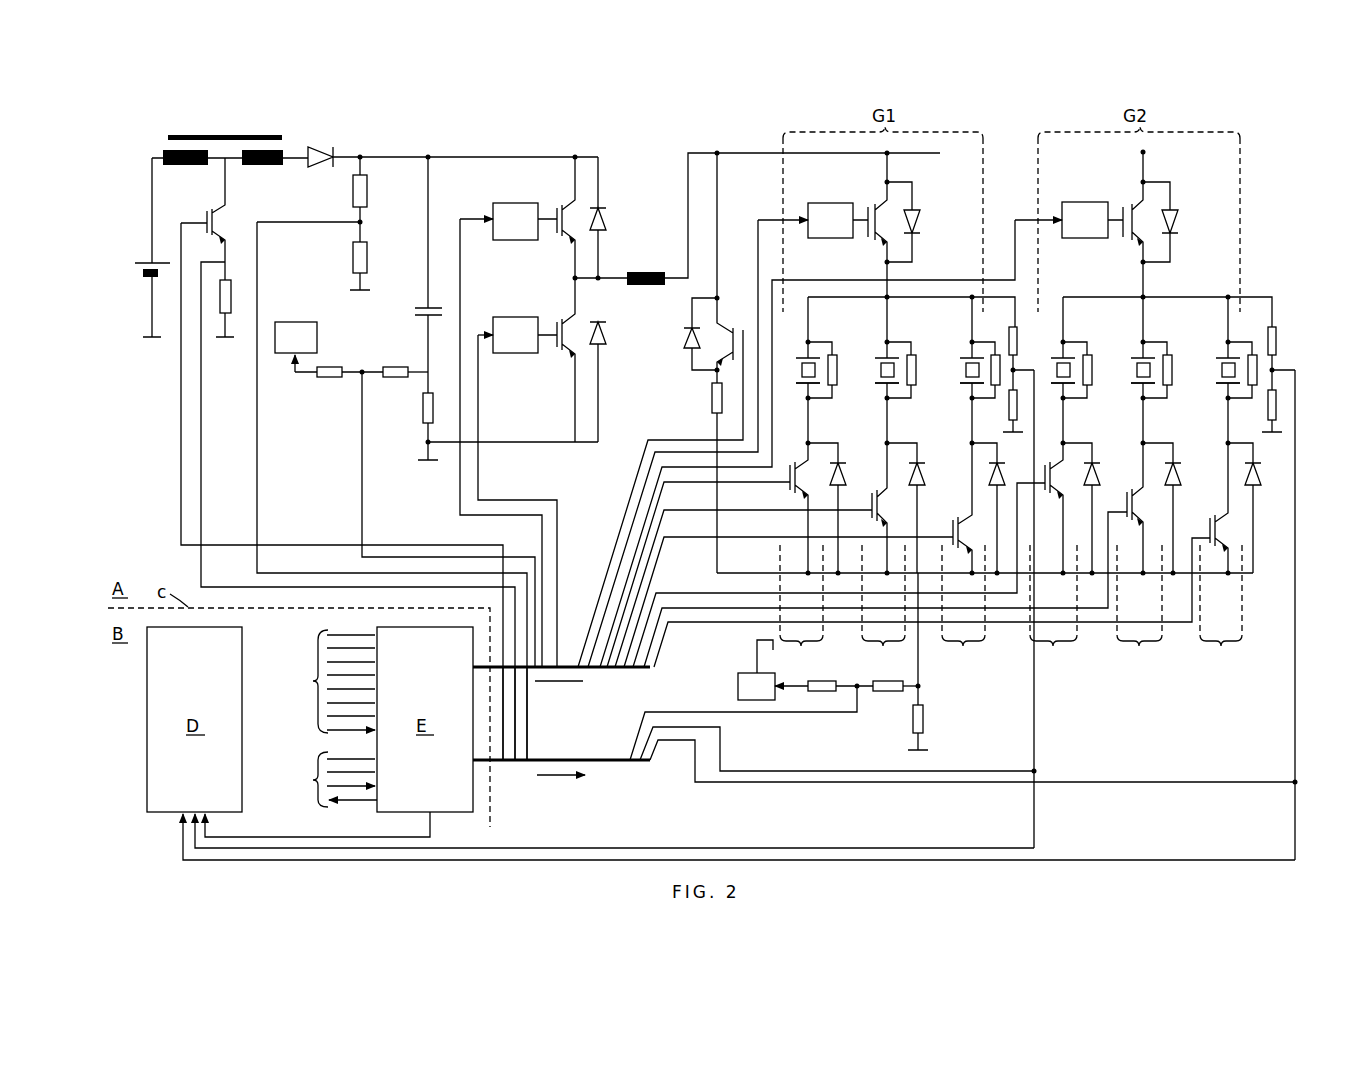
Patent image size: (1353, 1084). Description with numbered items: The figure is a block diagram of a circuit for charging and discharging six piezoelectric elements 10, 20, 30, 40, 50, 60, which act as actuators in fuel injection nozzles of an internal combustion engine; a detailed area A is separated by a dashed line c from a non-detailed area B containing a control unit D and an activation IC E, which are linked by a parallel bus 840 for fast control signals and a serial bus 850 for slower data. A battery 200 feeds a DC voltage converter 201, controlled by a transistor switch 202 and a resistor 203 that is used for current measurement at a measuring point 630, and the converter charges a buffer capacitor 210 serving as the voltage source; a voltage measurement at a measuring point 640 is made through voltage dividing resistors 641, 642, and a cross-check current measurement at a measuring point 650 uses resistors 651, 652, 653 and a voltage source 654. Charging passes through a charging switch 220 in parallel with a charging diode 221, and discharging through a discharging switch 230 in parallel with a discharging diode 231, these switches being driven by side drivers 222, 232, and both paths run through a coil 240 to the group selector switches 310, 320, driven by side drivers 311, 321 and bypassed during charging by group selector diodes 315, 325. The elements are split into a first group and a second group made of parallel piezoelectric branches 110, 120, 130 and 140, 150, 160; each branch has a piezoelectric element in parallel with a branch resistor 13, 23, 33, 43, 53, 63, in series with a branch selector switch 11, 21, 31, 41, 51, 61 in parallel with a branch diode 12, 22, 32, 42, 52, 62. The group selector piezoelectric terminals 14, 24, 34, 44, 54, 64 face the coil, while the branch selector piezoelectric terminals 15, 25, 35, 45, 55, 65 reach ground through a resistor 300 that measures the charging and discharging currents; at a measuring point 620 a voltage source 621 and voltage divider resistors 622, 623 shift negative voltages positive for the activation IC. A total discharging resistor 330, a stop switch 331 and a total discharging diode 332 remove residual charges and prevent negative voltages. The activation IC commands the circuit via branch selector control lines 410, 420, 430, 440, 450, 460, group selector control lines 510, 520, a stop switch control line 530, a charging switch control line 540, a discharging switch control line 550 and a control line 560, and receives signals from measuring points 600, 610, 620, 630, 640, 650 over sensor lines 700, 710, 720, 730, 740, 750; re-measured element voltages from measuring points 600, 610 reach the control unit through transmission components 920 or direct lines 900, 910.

The battery 200 is at (160, 258).
The DC voltage converter 201 is at (222, 135).
The transistor switch 202 is at (222, 215).
The resistor 203 is at (236, 300).
The buffer capacitor 210 is at (415, 312).
The charging switch 220 is at (548, 240).
The charging diode 221 is at (610, 212).
The side driver 222 is at (512, 203).
The discharging switch 230 is at (556, 355).
The discharging diode 231 is at (604, 345).
The side driver 232 is at (512, 317).
The coil 240 is at (646, 272).
The resistor 300 is at (923, 720).
The group selector switch 310 is at (866, 207).
The side driver 311 is at (822, 203).
The group selector diode 315 is at (920, 215).
The group selector switch 320 is at (1122, 207).
The side driver 321 is at (1077, 202).
The group selector diode 325 is at (1178, 215).
The total discharging resistor 330 is at (712, 398).
The stop switch 331 is at (742, 325).
The total discharging diode 332 is at (685, 336).
The branch selector control line 410 is at (623, 538).
The branch selector control line 420 is at (618, 563).
The branch selector control line 430 is at (615, 590).
The branch selector control line 440 is at (676, 593).
The branch selector control line 450 is at (720, 608).
The branch selector control line 460 is at (762, 622).
The group selector control line 510 is at (628, 491).
The group selector control line 520 is at (626, 515).
The stop switch control line 530 is at (633, 468).
The charging switch control line 540 is at (460, 494).
The discharging switch control line 550 is at (478, 490).
The control line 560 is at (181, 510).
The measuring point 600 is at (1020, 345).
The measuring point 610 is at (1280, 350).
The measuring point 620 is at (857, 686).
The voltage source 621 is at (738, 690).
The voltage divider resistor 622 is at (822, 692).
The voltage divider resistor 623 is at (886, 692).
The measuring point 630 is at (232, 245).
The measuring point 640 is at (362, 222).
The voltage dividing resistor 641 is at (367, 190).
The voltage dividing resistor 642 is at (367, 256).
The measuring point 650 is at (362, 370).
The resistor 651 is at (423, 425).
The resistor 652 is at (330, 377).
The resistor 653 is at (395, 377).
The voltage source 654 is at (296, 322).
The sensor line 700 is at (1036, 750).
The sensor line 710 is at (1295, 738).
The sensor line 720 is at (645, 716).
The sensor line 730 is at (503, 700).
The sensor line 740 is at (515, 728).
The sensor line 750 is at (527, 752).
The parallel bus 840 is at (312, 686).
The serial bus 850 is at (312, 779).
The direct line 900 is at (627, 848).
The direct line 910 is at (1112, 860).
The transmission components 920 is at (295, 837).
The piezoelectric element 10 is at (798, 370).
The branch selector switch 11 is at (790, 483).
The branch diode 12 is at (846, 475).
The branch resistor 13 is at (836, 375).
The group selector piezoelectric terminal 14 is at (810, 342).
The branch selector piezoelectric terminal 15 is at (798, 383).
The piezoelectric element 20 is at (877, 370).
The branch selector switch 21 is at (872, 503).
The branch diode 22 is at (925, 480).
The branch resistor 23 is at (915, 375).
The group selector piezoelectric terminal 24 is at (889, 342).
The branch selector piezoelectric terminal 25 is at (878, 383).
The piezoelectric element 30 is at (962, 370).
The branch selector switch 31 is at (953, 533).
The branch diode 32 is at (1005, 478).
The branch resistor 33 is at (998, 390).
The group selector piezoelectric terminal 34 is at (975, 342).
The branch selector piezoelectric terminal 35 is at (962, 383).
The piezoelectric element 40 is at (1053, 370).
The branch selector switch 41 is at (1052, 505).
The branch diode 42 is at (1100, 475).
The branch resistor 43 is at (1090, 375).
The group selector piezoelectric terminal 44 is at (1065, 342).
The branch selector piezoelectric terminal 45 is at (1053, 383).
The piezoelectric element 50 is at (1133, 370).
The branch selector switch 51 is at (1127, 500).
The branch diode 52 is at (1181, 475).
The branch resistor 53 is at (1171, 375).
The group selector piezoelectric terminal 54 is at (1146, 342).
The branch selector piezoelectric terminal 55 is at (1133, 383).
The piezoelectric element 60 is at (1218, 370).
The branch selector switch 61 is at (1210, 533).
The branch diode 62 is at (1261, 478).
The branch resistor 63 is at (1253, 390).
The group selector piezoelectric terminal 64 is at (1231, 342).
The branch selector piezoelectric terminal 65 is at (1218, 383).
The piezoelectric branch 110 is at (801, 607).
The piezoelectric branch 120 is at (883, 607).
The piezoelectric branch 130 is at (963, 607).
The piezoelectric branch 140 is at (1053, 608).
The piezoelectric branch 150 is at (1139, 608).
The piezoelectric branch 160 is at (1221, 608).